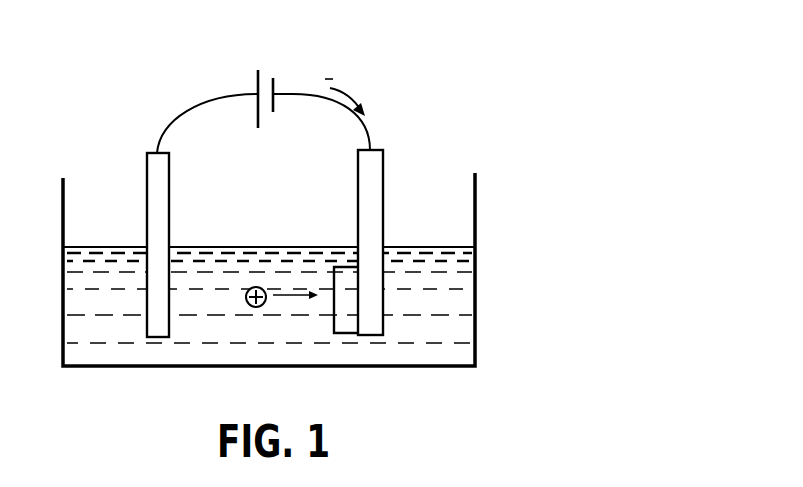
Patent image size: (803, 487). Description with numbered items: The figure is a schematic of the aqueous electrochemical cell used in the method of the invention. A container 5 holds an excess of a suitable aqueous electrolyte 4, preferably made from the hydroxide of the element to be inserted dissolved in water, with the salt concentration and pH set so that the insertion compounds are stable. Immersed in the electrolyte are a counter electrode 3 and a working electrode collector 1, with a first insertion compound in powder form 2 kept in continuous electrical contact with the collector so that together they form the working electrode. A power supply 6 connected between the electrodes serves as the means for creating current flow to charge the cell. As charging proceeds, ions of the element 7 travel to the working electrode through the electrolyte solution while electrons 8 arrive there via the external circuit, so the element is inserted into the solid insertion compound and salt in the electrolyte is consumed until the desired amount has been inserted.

The working electrode collector 1 is at (373, 184).
The first insertion compound in powder form 2 is at (346, 323).
The counter electrode 3 is at (152, 173).
The aqueous electrolyte 4 is at (252, 350).
The container 5 is at (477, 288).
The power supply 6 is at (267, 72).
The ions of the element 7 is at (245, 303).
The electrons 8 is at (340, 85).